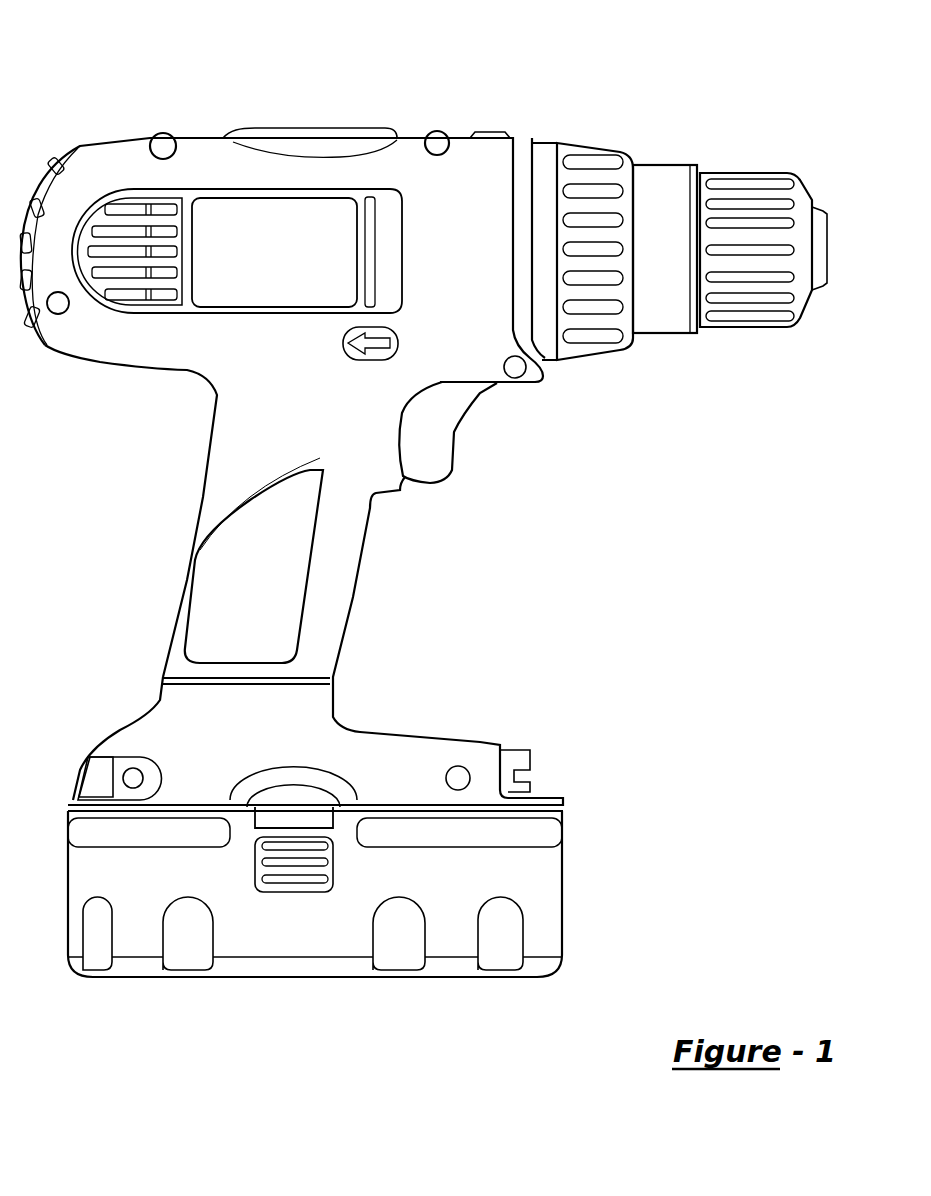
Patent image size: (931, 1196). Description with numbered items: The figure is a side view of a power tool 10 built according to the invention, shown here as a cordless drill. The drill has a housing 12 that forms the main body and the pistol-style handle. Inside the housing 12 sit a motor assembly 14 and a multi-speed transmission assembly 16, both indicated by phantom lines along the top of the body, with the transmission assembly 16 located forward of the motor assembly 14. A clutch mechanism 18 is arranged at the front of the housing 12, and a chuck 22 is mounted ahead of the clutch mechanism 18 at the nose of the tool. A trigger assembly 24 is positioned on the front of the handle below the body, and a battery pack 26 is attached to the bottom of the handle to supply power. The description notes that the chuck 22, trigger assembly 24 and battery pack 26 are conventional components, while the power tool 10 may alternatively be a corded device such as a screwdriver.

The power tool 10 is at (423, 492).
The housing 12 is at (72, 121).
The motor assembly 14 is at (182, 172).
The multi-speed transmission assembly 16 is at (292, 174).
The clutch mechanism 18 is at (587, 140).
The chuck 22 is at (767, 160).
The trigger assembly 24 is at (483, 412).
The battery pack 26 is at (536, 885).